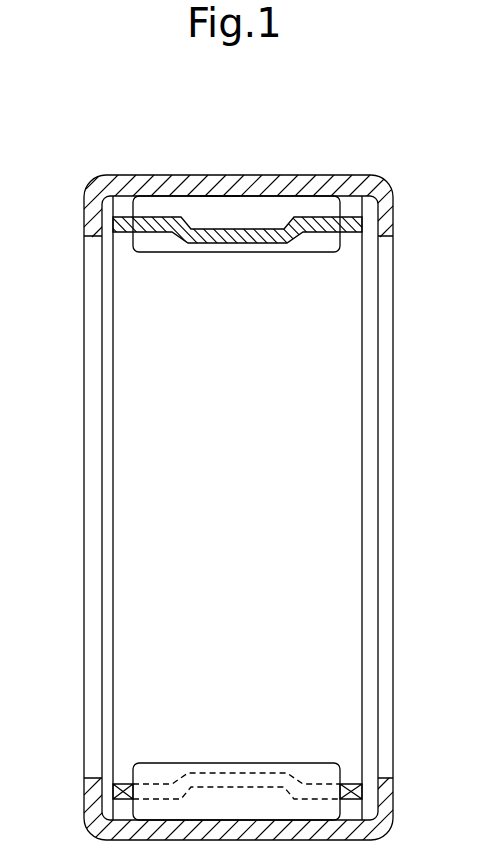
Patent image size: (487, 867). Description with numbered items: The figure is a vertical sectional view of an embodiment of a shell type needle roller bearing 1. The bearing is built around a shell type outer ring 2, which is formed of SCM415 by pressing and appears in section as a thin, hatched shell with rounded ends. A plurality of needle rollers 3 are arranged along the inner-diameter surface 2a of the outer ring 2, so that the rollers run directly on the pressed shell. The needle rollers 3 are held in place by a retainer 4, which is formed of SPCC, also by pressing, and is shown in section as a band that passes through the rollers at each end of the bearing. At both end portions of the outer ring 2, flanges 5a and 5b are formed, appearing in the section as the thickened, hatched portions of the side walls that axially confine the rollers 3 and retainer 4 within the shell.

The shell type needle roller bearing 1 is at (136, 166).
The shell type outer ring 2 is at (293, 184).
The inner-diameter surface 2a is at (228, 203).
The needle rollers 3 is at (316, 244).
The retainer 4 is at (229, 243).
The flange 5a is at (90, 218).
The flange 5b is at (385, 222).